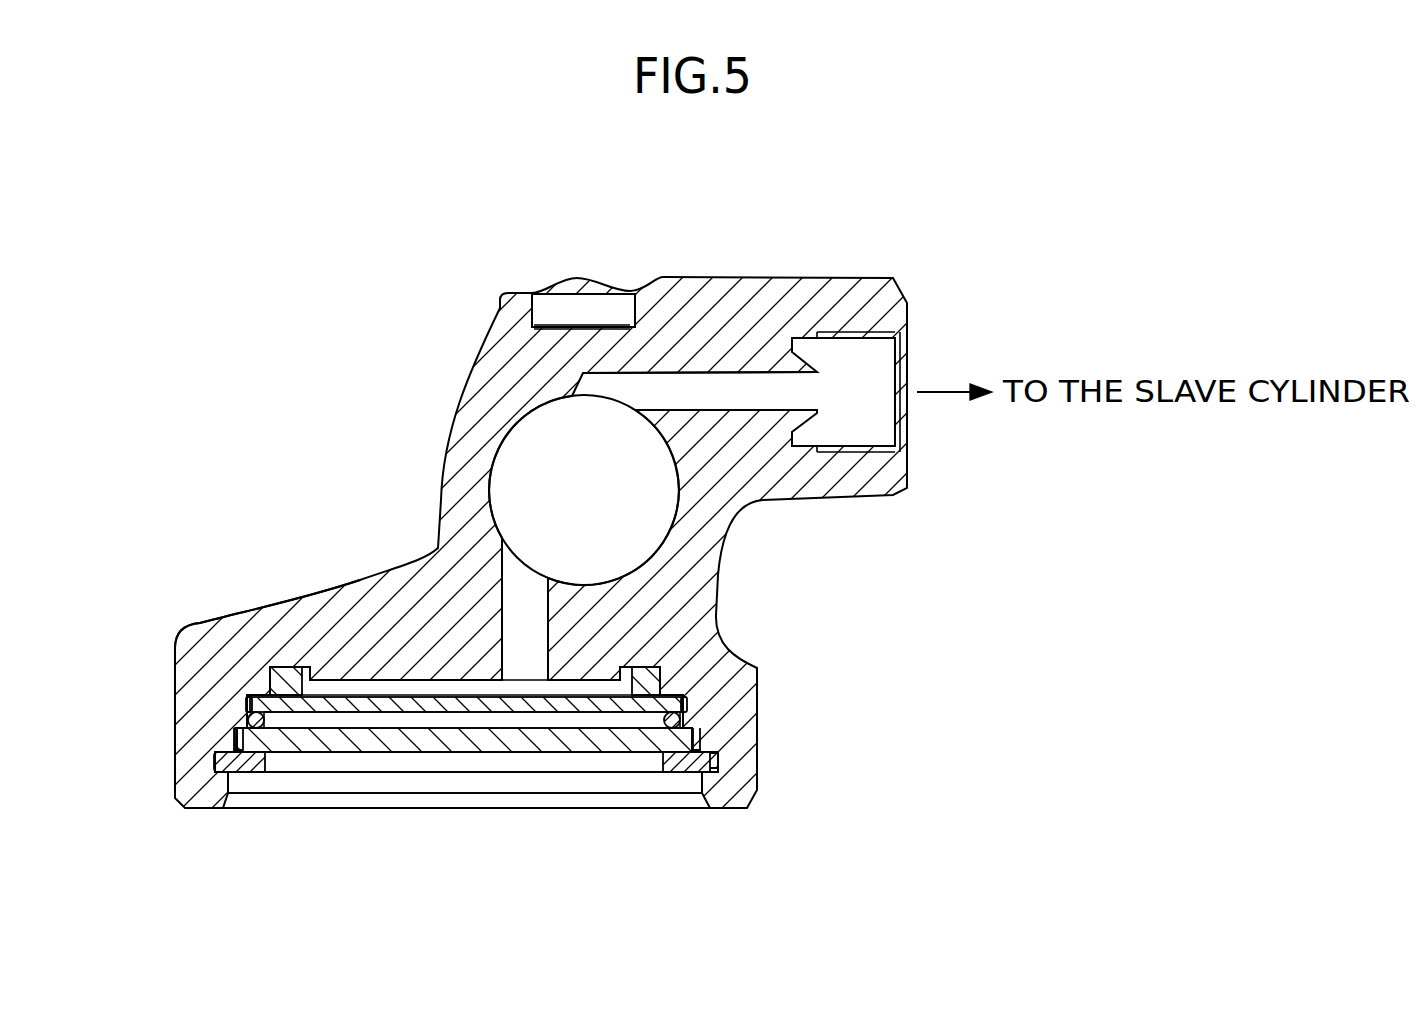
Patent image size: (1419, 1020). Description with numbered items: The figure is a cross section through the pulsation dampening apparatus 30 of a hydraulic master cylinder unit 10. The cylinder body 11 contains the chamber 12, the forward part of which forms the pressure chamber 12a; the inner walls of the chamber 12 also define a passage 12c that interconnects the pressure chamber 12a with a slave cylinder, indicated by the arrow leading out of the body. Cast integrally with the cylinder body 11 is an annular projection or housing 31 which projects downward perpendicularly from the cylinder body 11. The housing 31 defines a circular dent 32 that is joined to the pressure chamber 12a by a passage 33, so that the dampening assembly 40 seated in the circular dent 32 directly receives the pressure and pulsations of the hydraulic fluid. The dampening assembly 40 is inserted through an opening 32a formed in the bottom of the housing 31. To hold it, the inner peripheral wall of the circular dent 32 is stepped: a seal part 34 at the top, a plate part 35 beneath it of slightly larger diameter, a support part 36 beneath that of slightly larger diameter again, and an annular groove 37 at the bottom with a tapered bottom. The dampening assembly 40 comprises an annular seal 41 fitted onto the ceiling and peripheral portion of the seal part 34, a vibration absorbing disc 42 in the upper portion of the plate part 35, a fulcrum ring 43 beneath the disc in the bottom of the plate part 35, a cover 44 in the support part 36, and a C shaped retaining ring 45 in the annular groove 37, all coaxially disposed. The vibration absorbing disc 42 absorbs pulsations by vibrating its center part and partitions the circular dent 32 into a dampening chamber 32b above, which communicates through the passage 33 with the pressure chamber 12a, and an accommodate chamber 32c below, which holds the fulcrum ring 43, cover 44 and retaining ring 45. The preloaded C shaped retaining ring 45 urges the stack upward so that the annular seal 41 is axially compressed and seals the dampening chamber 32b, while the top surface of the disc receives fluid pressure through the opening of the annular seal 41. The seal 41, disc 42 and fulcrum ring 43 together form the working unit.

The hydraulic unit 10 is at (541, 505).
The cylinder body 11 is at (760, 290).
The chamber 12 is at (584, 490).
The pressure chamber 12a is at (645, 500).
The passage 12c is at (704, 392).
The pulsation dampening apparatus 30 is at (525, 505).
The annular projection 31 is at (230, 625).
The circular dent 32 is at (578, 712).
The opening 32a is at (548, 785).
The dampening chamber 32b is at (563, 690).
The accommodate chamber 32c is at (413, 715).
The passage 33 is at (512, 590).
The seal part 34 is at (272, 668).
The plate part 35 is at (250, 702).
The support part 36 is at (250, 722).
The annular groove 37 is at (218, 757).
The dampening assembly 40 is at (535, 720).
The annular seal 41 is at (668, 679).
The vibration absorbing disc 42 is at (683, 700).
The fulcrum ring 43 is at (690, 713).
The cover 44 is at (684, 738).
The C shaped retaining ring 45 is at (707, 760).